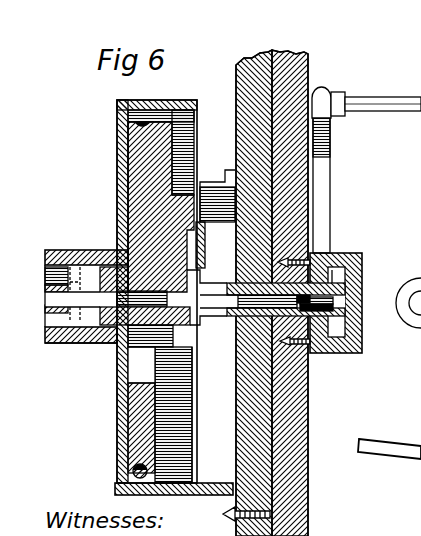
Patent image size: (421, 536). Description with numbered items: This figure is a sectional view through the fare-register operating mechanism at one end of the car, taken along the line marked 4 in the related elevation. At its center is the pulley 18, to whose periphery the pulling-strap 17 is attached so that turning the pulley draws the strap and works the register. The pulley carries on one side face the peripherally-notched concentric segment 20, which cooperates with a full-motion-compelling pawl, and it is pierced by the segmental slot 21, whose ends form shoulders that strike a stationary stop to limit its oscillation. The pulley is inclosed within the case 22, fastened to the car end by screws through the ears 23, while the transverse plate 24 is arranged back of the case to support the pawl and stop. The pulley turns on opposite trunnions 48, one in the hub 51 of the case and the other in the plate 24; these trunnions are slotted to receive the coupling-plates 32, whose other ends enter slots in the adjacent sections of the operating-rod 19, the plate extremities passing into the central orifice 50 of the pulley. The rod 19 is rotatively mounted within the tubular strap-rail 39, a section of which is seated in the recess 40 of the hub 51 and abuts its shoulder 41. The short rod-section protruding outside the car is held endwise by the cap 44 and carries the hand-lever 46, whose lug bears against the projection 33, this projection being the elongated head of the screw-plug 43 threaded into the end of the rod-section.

The section line 4 is at (283, 30).
The pulling-strap 17 is at (133, 472).
The pulley 18 is at (157, 403).
The operating-rod 19 is at (46, 344).
The peripherally-notched concentric segment 20 is at (183, 207).
The segmental slot 21 is at (143, 372).
The case 22 is at (207, 484).
The ears 23 is at (216, 218).
The transverse plate 24 is at (205, 257).
The coupling-plates 32 is at (123, 296).
The projection 33 is at (339, 276).
The strap-rail 39 is at (50, 252).
The recess 40 is at (47, 328).
The shoulder 41 is at (90, 268).
The screw-plug 43 is at (346, 301).
The caps 44 is at (363, 292).
The hand-lever 46 is at (323, 214).
The trunnions 48 is at (108, 318).
The central orifice 50 is at (231, 299).
The hub 51 is at (68, 266).